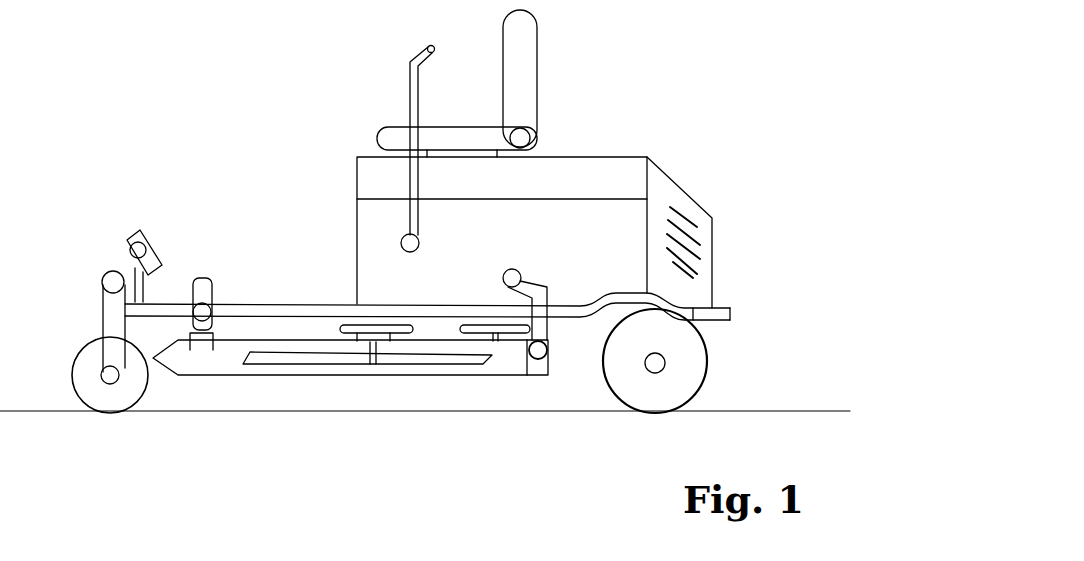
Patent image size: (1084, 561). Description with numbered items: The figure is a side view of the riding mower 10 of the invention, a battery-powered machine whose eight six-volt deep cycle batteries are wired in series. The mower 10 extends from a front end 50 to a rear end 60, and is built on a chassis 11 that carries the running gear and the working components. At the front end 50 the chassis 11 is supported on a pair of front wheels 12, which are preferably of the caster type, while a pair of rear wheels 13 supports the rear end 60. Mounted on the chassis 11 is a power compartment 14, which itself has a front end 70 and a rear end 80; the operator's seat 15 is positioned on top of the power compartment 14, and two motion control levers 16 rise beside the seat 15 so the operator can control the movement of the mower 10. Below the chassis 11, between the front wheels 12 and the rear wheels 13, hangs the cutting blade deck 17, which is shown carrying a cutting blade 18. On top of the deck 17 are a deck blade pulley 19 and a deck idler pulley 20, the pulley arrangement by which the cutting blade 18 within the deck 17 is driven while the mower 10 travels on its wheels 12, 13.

The riding mower 10 is at (266, 92).
The chassis 11 is at (295, 293).
The front wheels 12 is at (143, 393).
The rear wheels 13 is at (708, 367).
The power compartment 14 is at (610, 255).
The seat 15 is at (535, 70).
The motion control levers 16 is at (412, 97).
The cutting blade deck 17 is at (220, 363).
The cutting blade 18 is at (438, 360).
The deck blade pulley 19 is at (400, 327).
The deck idler pulley 20 is at (483, 327).
The front end 50 is at (80, 257).
The rear end 60 is at (802, 190).
The front end of power compartment 70 is at (355, 205).
The rear end of power compartment 80 is at (676, 196).